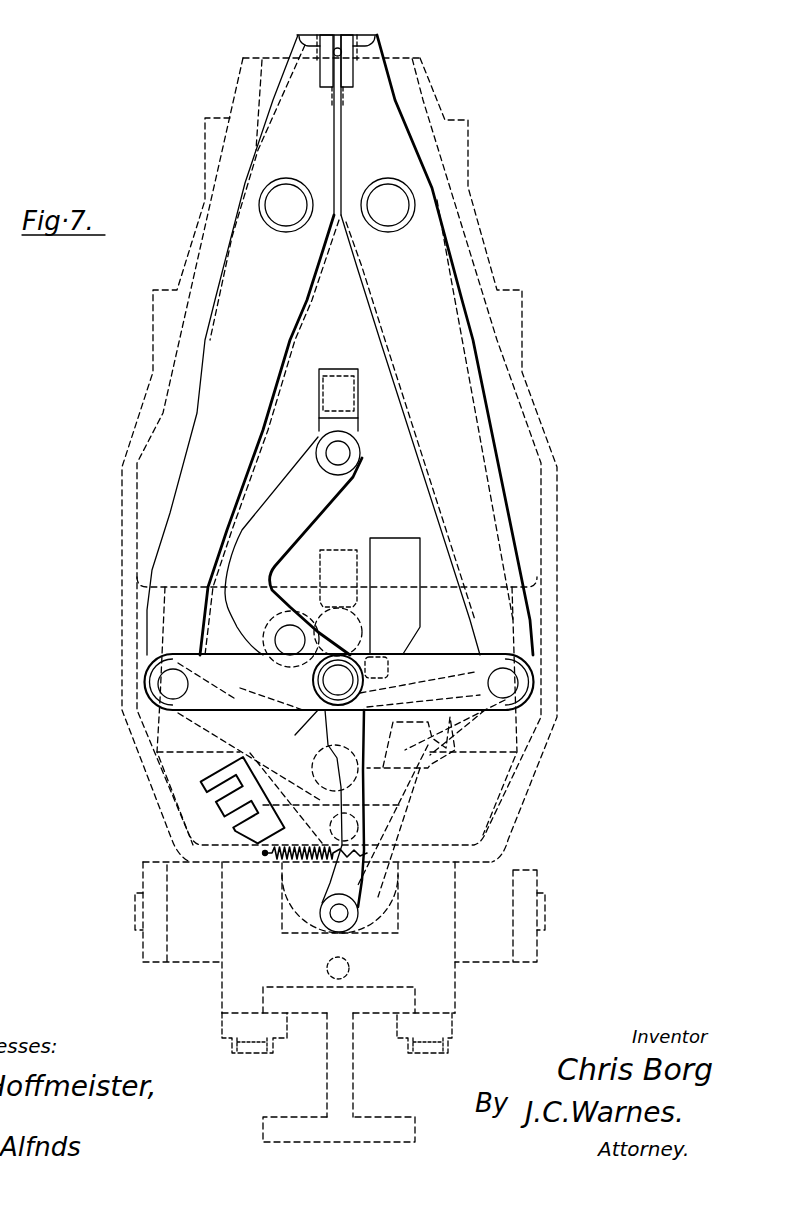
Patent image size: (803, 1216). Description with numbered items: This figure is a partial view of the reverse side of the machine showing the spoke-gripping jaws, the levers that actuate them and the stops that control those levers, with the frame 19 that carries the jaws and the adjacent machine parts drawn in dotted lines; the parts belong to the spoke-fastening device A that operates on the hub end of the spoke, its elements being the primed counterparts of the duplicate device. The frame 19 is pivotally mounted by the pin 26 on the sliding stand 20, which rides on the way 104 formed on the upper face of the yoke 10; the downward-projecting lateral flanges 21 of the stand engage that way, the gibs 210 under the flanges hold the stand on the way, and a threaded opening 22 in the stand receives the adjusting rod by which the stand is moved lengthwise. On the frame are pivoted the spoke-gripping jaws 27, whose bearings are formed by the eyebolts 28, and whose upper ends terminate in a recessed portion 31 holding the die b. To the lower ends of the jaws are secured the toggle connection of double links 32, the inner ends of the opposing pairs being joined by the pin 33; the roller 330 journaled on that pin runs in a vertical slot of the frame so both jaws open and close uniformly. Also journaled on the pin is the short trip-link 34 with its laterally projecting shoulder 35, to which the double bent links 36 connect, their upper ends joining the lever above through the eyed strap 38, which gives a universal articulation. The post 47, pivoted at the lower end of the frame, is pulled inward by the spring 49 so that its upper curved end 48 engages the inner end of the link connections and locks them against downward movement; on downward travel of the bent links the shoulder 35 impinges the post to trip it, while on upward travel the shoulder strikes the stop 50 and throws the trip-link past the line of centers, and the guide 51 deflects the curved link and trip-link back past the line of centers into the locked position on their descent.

The die b is at (337, 114).
The recessed portion 31 is at (345, 72).
The spoke-gripping jaws 27 is at (243, 263).
The eyebolts 28 is at (386, 190).
The frame 19 is at (113, 676).
The strap 38 is at (350, 428).
The bent links 36 is at (295, 467).
The stop 50 is at (370, 596).
The trip-link 34 is at (315, 645).
The double links 32 is at (339, 682).
The pin 33 is at (338, 680).
The roller 330 is at (318, 681).
The curved end 48 is at (431, 777).
The post 47 is at (338, 821).
The shoulder 35 is at (322, 712).
The guide 51 is at (230, 803).
The spring 49 is at (268, 862).
The spoke-fastening device A is at (324, 813).
The pin 26 is at (338, 912).
The sliding stand 20 is at (338, 937).
The threaded opening 22 is at (349, 967).
The lateral flanges 21 is at (460, 999).
The gibs 210 is at (461, 1028).
The way 104 is at (370, 1010).
The yoke 10 is at (337, 1073).